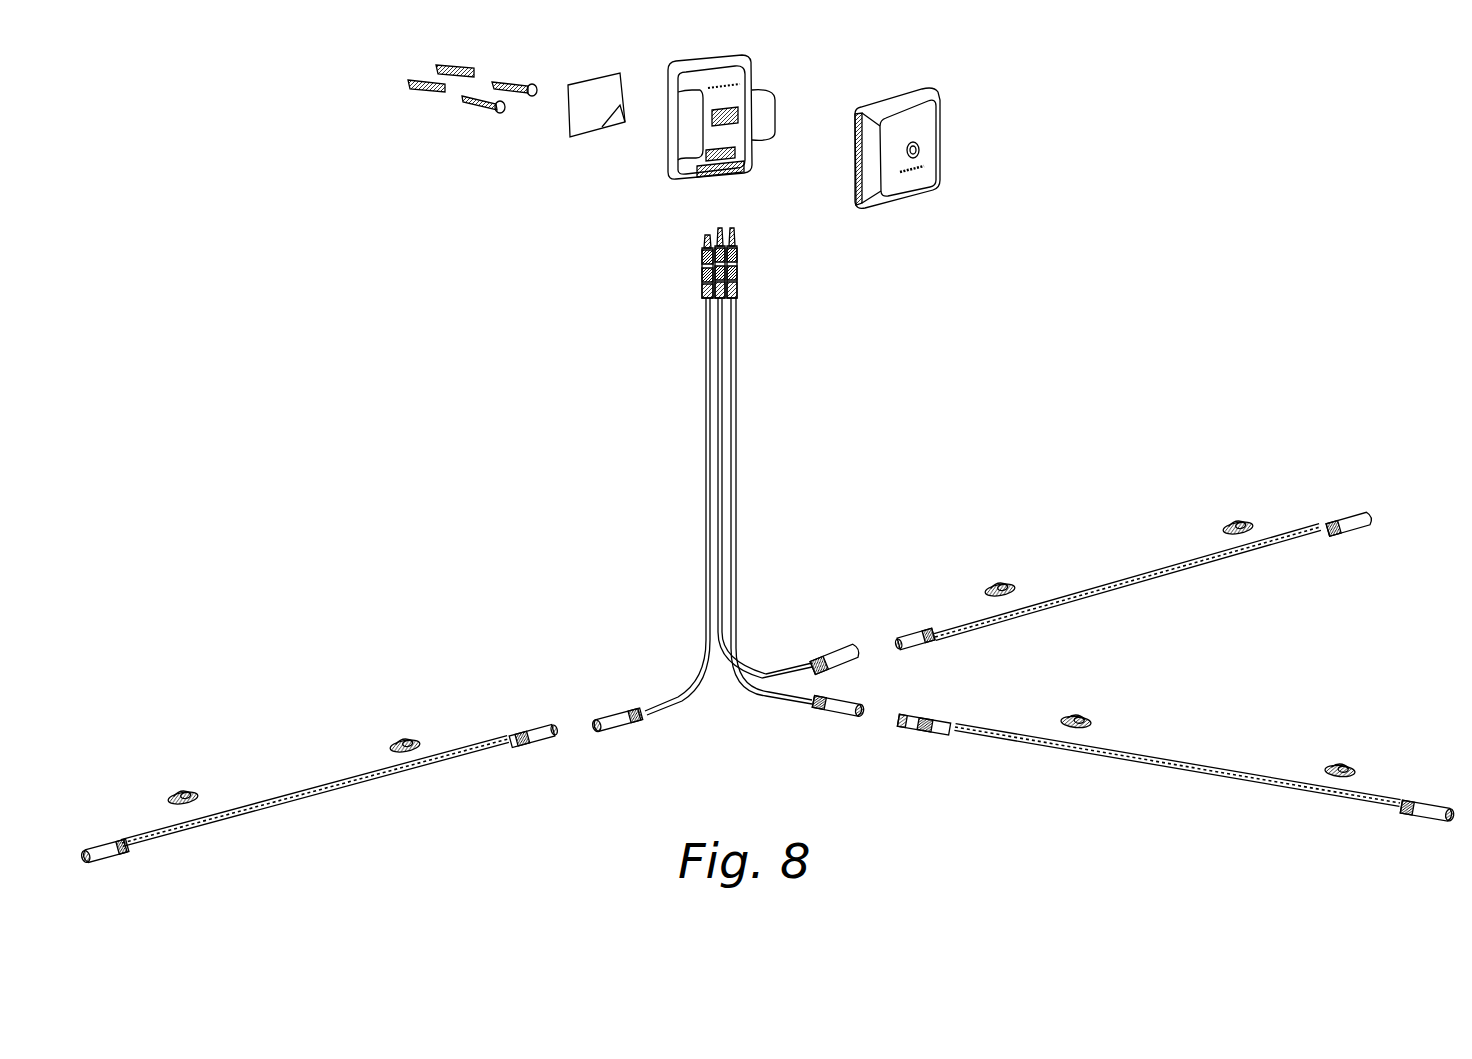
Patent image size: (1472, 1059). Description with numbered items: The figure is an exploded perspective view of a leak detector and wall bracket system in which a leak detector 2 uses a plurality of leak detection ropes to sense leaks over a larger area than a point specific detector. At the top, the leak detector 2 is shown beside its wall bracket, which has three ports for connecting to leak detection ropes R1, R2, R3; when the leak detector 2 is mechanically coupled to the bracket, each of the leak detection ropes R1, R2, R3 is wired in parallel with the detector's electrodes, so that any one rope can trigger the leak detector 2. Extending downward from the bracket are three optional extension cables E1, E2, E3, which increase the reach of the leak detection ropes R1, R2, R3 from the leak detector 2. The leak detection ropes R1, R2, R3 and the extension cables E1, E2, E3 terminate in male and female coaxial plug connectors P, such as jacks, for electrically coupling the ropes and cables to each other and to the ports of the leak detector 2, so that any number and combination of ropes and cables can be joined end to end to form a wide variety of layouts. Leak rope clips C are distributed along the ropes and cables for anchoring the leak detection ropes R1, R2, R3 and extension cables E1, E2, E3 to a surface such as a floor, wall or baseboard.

The leak detector 2 is at (920, 135).
The plug P is at (708, 250).
The extension cable E1 is at (706, 434).
The extension cable E2 is at (720, 508).
The extension cable E3 is at (736, 470).
The leak detection rope R1 is at (328, 800).
The leak detection rope R2 is at (1243, 787).
The leak detection rope R3 is at (1164, 557).
The leak rope clip C is at (190, 788).